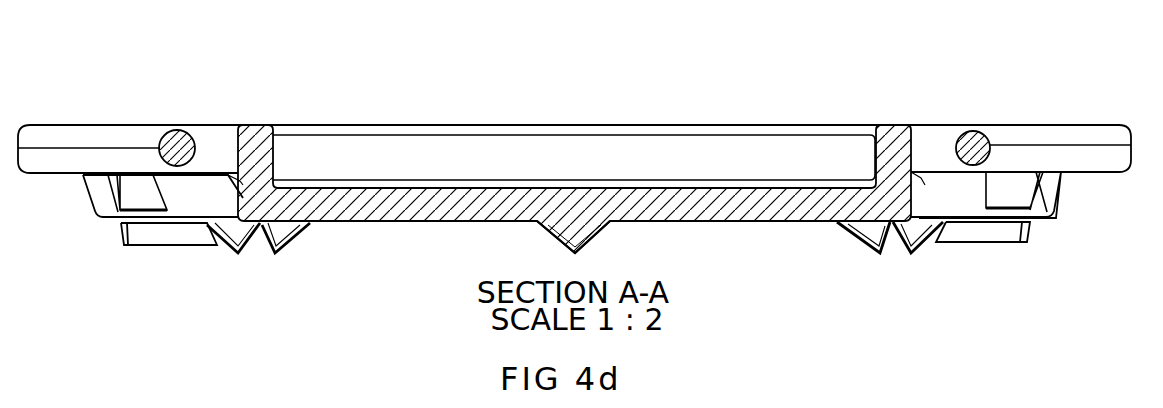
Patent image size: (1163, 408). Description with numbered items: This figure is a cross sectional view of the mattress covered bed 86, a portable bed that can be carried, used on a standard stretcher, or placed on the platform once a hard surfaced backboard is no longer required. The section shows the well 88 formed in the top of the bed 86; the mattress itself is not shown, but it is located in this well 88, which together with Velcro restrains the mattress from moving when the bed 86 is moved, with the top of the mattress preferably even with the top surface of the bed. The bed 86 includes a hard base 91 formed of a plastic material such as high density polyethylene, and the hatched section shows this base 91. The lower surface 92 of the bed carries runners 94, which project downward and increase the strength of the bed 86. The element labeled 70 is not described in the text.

The side wall 70 is at (257, 125).
The side wall 91 is at (893, 150).
The base plate 88 is at (392, 157).
The locating protrusion 94 is at (580, 237).
The bottom surface 92 is at (801, 219).
The cover assembly 86 is at (178, 292).